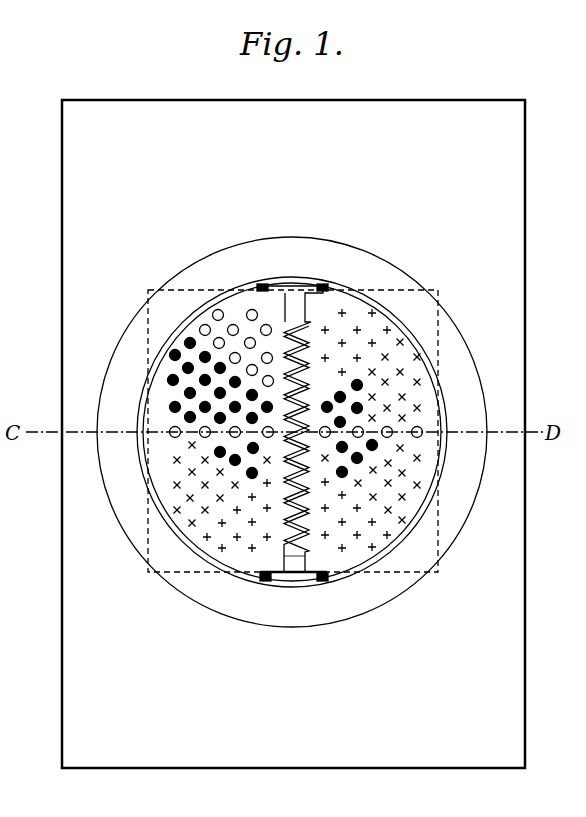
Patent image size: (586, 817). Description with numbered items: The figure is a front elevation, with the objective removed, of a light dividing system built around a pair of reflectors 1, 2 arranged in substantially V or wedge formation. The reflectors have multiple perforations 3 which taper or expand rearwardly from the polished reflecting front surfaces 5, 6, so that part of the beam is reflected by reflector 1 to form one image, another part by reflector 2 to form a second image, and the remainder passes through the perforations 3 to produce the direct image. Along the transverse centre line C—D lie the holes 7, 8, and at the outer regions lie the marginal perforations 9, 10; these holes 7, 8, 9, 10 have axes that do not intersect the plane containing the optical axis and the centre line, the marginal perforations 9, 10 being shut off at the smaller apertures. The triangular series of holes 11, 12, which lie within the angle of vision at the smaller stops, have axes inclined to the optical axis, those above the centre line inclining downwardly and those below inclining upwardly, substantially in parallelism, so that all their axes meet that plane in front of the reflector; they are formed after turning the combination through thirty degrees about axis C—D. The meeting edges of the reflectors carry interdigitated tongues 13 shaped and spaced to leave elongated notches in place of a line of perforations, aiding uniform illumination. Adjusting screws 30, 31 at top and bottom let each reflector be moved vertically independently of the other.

The reflector 1 is at (400, 342).
The reflector 2 is at (249, 577).
The perforations 3 is at (256, 312).
The polished reflecting front surface 5 is at (362, 551).
The polished reflecting front surface 6 is at (215, 548).
The holes along the centre line 7 is at (363, 428).
The holes along the centre line 8 is at (203, 436).
The marginal perforations 9 is at (360, 354).
The marginal perforations 10 is at (207, 327).
The triangular series of holes 11 is at (331, 381).
The triangular series of holes 12 is at (171, 378).
The interdigitated tongues 13 is at (300, 539).
The adjusting screws 30 is at (262, 284).
The adjusting screws 31 is at (275, 581).